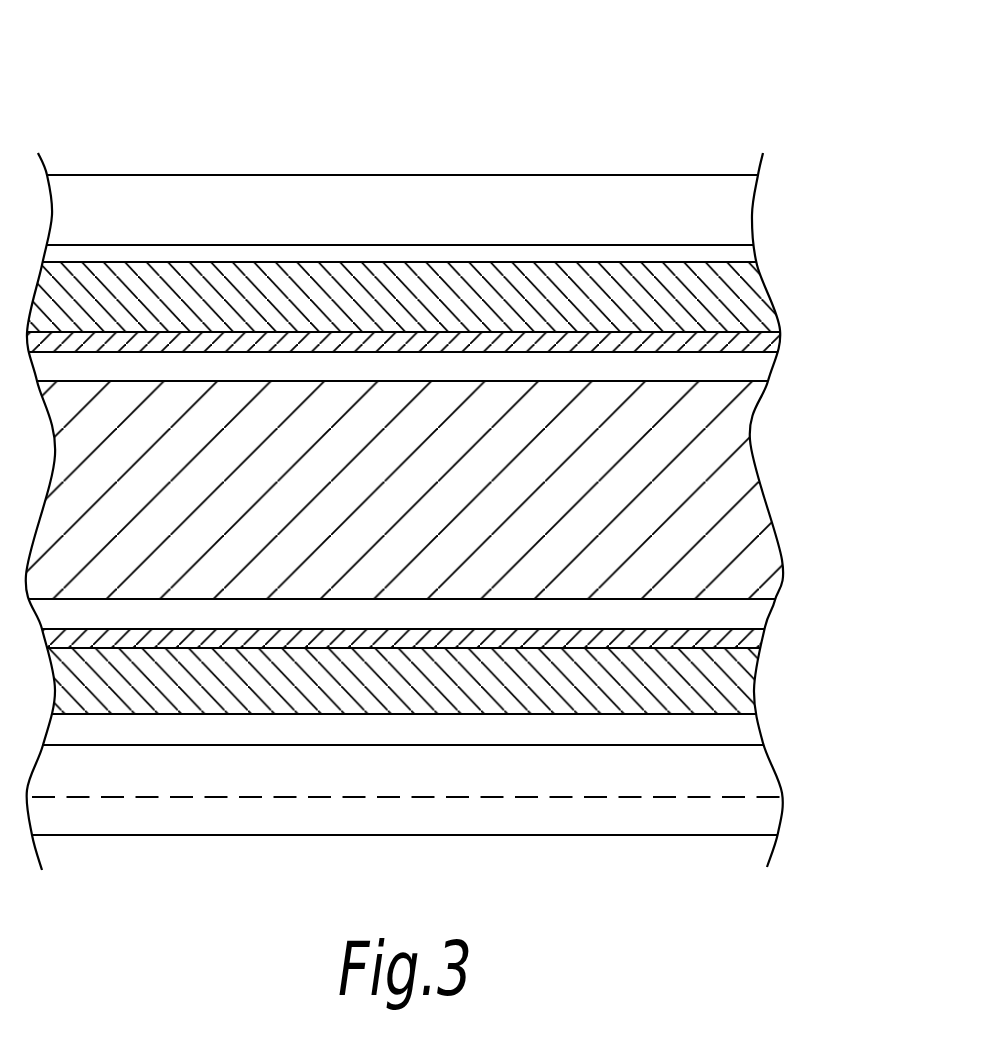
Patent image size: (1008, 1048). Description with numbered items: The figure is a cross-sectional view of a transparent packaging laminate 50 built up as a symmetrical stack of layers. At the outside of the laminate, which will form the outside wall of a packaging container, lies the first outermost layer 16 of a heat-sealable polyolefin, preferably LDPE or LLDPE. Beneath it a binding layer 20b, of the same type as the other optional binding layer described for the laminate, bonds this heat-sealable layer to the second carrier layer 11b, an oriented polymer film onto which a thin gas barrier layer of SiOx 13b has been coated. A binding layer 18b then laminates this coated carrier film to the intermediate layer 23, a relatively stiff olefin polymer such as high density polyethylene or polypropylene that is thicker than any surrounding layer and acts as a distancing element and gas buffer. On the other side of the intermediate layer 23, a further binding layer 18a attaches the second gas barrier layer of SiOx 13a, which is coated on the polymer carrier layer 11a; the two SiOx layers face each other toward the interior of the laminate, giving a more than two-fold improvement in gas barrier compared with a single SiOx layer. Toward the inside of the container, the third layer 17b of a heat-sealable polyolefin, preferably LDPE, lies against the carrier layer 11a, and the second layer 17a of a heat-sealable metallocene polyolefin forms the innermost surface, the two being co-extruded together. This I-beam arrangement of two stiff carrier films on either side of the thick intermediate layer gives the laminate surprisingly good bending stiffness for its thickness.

The transparent packaging laminate 50 is at (606, 114).
The first outermost layer of a heat-sealable polyolefin 16 is at (732, 200).
The binding layer 20b is at (742, 250).
The second carrier layer 11b is at (750, 297).
The gas barrier layer of SiOx 13b is at (765, 343).
The binding layer 18b is at (760, 362).
The intermediate layer 23 is at (733, 477).
The binding layer 18a is at (755, 611).
The gas barrier layer of SiOx 13a is at (750, 637).
The polymer carrier layer 11a is at (738, 688).
The third layer of a heat-sealable polyolefin 17b is at (755, 775).
The second layer of a heat-sealable polyolefin 17a is at (760, 815).